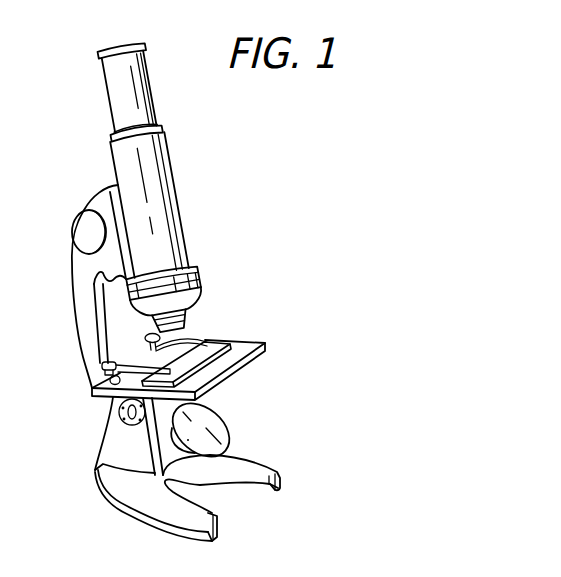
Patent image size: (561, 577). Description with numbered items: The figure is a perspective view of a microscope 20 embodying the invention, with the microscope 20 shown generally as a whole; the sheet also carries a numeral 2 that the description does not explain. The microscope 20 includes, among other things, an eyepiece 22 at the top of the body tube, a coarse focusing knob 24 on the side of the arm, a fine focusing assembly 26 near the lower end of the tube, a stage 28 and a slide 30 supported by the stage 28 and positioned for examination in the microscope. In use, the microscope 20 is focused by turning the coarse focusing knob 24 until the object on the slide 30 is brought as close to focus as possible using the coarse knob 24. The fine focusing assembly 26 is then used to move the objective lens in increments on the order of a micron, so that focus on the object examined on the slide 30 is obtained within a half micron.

The microscope 2 is at (203, 255).
The microscope 20 is at (175, 162).
The eyepiece 22 is at (143, 82).
The coarse focusing knob 24 is at (65, 220).
The fine focusing assembly 26 is at (207, 279).
The stage 28 is at (252, 368).
The slide 30 is at (230, 333).